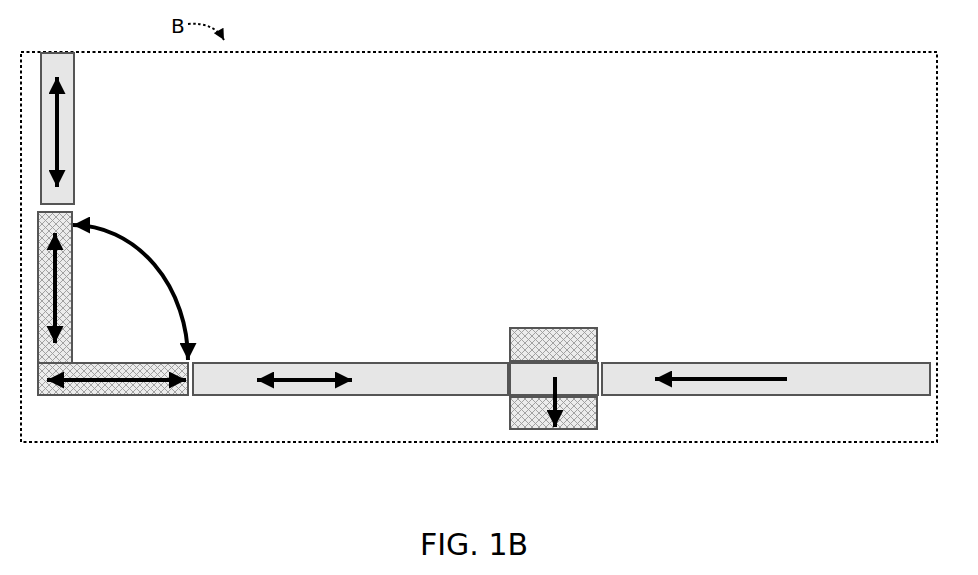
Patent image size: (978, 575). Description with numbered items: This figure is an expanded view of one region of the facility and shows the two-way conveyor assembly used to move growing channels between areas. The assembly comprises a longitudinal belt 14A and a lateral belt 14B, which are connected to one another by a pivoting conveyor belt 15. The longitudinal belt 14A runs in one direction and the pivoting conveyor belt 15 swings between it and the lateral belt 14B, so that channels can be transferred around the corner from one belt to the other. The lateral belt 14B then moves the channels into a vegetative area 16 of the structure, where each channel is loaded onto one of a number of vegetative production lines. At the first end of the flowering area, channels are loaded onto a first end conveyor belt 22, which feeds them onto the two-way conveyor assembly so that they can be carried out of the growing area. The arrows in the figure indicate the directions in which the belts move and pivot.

The longitudinal belt 14A is at (73, 118).
The lateral belt 14B is at (352, 363).
The pivoting conveyor belt 15 is at (113, 395).
The vegetative area 16 is at (554, 402).
The first end conveyor belt 22 is at (765, 395).